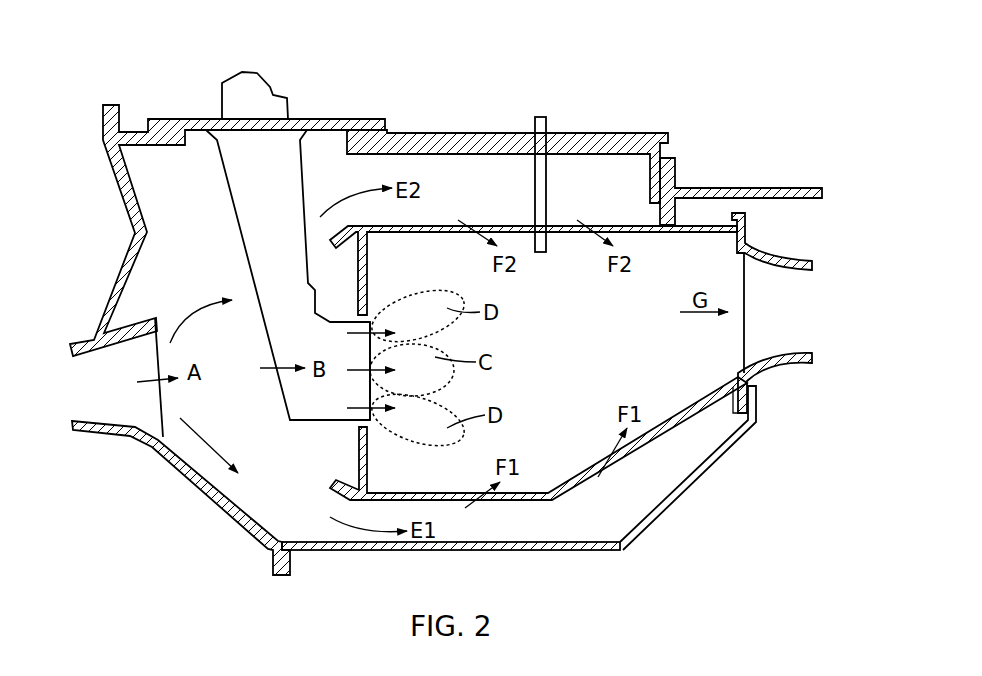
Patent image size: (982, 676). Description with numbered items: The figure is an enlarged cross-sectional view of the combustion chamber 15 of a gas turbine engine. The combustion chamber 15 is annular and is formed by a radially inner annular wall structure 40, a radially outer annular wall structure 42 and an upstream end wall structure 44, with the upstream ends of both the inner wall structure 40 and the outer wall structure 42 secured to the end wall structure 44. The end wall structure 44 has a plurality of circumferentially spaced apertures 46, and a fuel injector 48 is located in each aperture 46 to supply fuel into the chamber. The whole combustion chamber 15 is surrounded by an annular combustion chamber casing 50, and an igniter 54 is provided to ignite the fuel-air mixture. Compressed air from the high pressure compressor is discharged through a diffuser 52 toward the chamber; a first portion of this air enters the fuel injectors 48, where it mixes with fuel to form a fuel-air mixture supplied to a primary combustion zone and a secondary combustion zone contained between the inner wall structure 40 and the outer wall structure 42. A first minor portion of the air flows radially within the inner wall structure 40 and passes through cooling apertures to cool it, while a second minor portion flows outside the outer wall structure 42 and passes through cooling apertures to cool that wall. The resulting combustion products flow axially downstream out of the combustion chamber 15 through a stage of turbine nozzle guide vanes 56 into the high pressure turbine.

The combustion chamber 15 is at (602, 215).
The radially inner annular wall structure 40 is at (650, 440).
The radially outer annular wall structure 42 is at (413, 227).
The upstream end wall structure 44 is at (360, 452).
The aperture 46 is at (372, 320).
The fuel injector 48 is at (253, 278).
The combustion chamber casing 50 is at (603, 138).
The diffuser 52 is at (122, 410).
The igniter 54 is at (544, 172).
The turbine nozzle guide vanes 56 is at (780, 342).